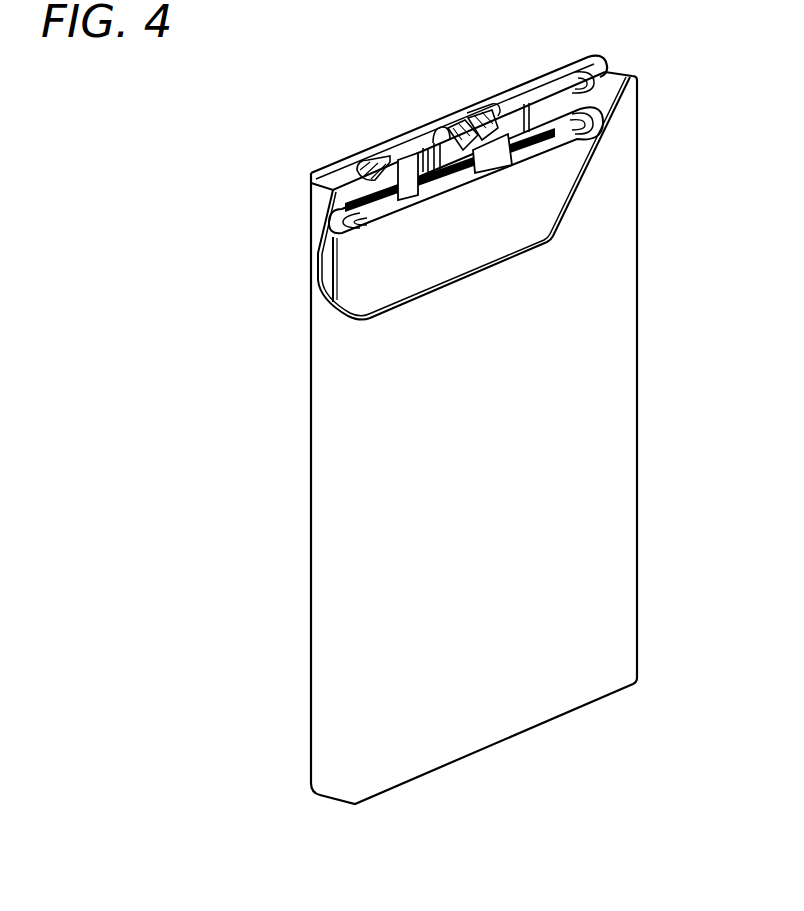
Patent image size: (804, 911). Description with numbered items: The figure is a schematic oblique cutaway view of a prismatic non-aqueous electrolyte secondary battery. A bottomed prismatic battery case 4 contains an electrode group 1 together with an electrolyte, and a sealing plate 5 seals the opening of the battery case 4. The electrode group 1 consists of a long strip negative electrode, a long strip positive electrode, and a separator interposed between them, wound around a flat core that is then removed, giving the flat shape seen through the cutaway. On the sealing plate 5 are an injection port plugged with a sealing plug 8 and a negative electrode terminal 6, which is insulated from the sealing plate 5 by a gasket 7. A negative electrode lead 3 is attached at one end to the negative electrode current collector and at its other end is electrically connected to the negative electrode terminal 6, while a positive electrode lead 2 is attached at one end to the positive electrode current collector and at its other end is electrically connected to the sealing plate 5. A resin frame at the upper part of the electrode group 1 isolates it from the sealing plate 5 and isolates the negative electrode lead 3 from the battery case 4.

The electrode group 1 is at (476, 256).
The positive electrode lead 2 is at (410, 190).
The negative electrode lead 3 is at (500, 155).
The battery case 4 is at (610, 567).
The sealing plate 5 is at (513, 103).
The negative electrode terminal 6 is at (480, 118).
The gasket 7 is at (433, 129).
The sealing plug 8 is at (372, 166).